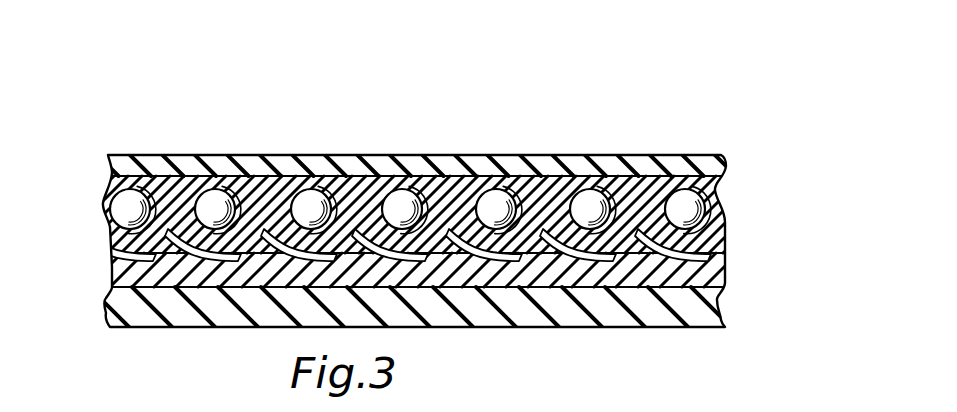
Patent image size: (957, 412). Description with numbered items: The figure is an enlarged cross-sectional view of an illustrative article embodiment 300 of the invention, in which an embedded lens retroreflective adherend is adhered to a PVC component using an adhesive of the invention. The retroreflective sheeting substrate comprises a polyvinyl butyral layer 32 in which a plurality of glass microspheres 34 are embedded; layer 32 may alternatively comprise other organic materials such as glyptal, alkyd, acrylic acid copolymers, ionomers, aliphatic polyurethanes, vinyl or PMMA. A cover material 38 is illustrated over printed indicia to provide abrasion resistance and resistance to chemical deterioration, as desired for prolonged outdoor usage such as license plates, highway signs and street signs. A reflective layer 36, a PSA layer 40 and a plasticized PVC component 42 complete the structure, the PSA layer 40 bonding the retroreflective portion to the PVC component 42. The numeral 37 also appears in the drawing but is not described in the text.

The article embodiment 300 is at (672, 105).
The polyvinyl butyral layer 32 is at (112, 183).
The glass microspheres 34 is at (697, 195).
The reflective layer 36 is at (135, 290).
The fibers 37 is at (392, 177).
The cover material 38 is at (512, 160).
The PSA layer 40 is at (718, 268).
The plasticized PVC component 42 is at (708, 302).